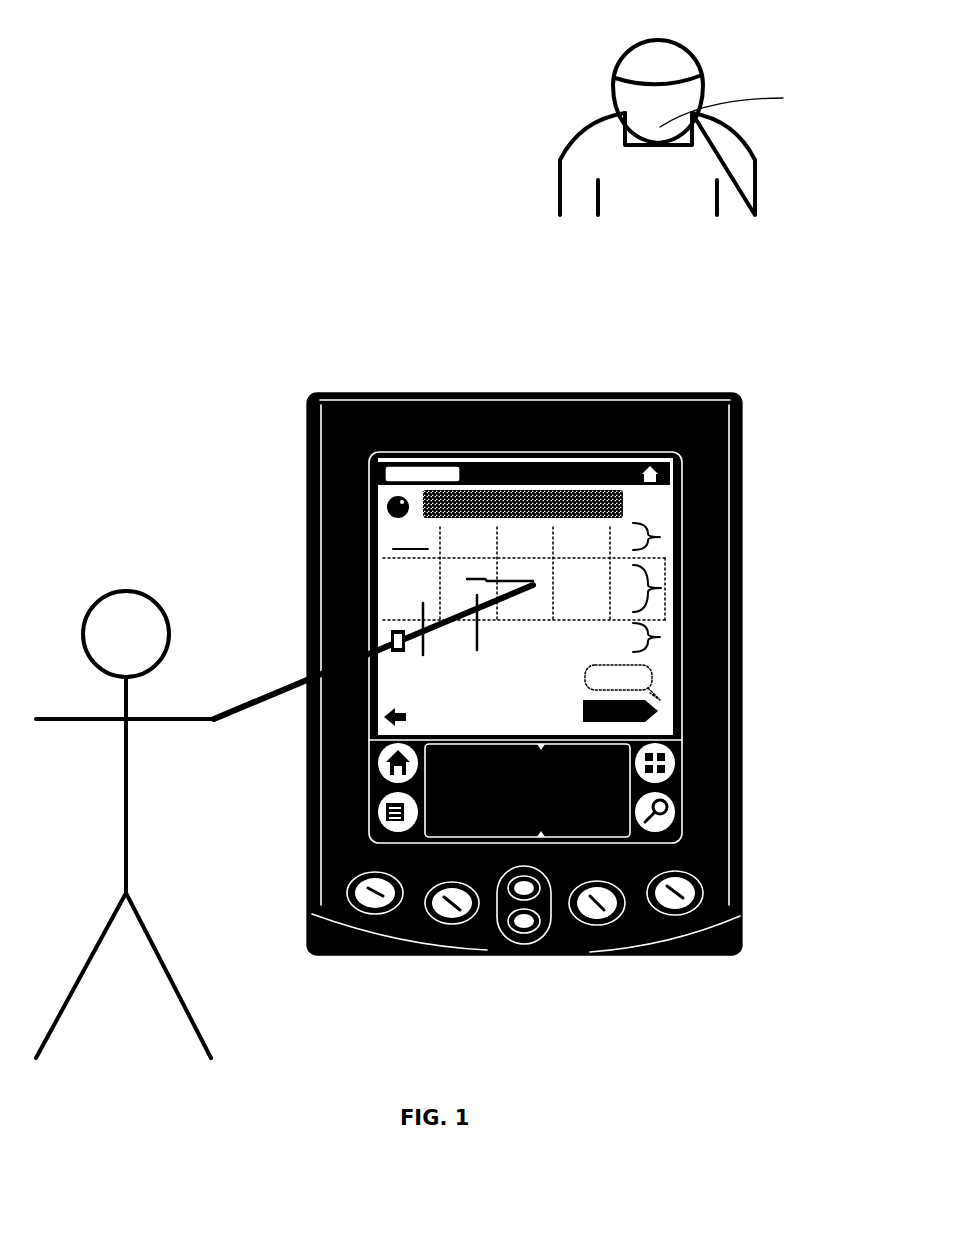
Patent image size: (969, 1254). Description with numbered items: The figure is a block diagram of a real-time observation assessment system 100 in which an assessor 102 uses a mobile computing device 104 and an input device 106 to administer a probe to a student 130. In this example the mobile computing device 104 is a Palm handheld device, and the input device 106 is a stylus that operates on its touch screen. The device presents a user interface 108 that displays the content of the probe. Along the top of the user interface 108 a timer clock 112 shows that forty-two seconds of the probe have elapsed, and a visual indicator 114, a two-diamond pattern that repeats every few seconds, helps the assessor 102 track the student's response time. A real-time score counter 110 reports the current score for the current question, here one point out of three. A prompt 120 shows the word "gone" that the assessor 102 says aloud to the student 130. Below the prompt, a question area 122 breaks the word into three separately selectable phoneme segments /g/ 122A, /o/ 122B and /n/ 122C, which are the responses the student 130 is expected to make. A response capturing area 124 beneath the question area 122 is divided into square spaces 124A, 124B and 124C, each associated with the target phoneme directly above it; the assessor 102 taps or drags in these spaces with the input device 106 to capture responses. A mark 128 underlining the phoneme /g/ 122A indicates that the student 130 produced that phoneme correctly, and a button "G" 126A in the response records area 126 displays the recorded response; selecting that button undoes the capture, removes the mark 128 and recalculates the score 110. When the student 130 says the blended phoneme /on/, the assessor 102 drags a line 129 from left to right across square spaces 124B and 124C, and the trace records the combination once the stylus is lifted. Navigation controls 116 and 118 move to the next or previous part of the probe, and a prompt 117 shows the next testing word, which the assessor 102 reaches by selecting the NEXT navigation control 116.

The real-time observation assessment system 100 is at (379, 84).
The assessor 102 is at (126, 589).
The mobile computing device 104 is at (524, 674).
The input device 106 is at (283, 688).
The user interface 108 is at (390, 525).
The real-time score counter 110 is at (657, 493).
The timer clock 112 is at (447, 467).
The visual indicator 114 is at (542, 470).
The navigation control 116 is at (660, 698).
The prompt 117 is at (640, 665).
The navigation control 118 is at (383, 718).
The prompt 120 is at (383, 495).
The question area 122 is at (505, 575).
The phoneme segment /g/ 122A is at (415, 528).
The phoneme segment /o/ 122B is at (470, 527).
The phoneme segment /n/ 122C is at (530, 527).
The response capturing area 124 is at (664, 587).
The square space 124A is at (428, 641).
The square space 124B is at (488, 634).
The square space 124C is at (528, 602).
The response records area 126 is at (663, 636).
The button "G" 126A is at (388, 637).
The mark 128 is at (407, 551).
The line 129 is at (663, 537).
The student 130 is at (683, 75).